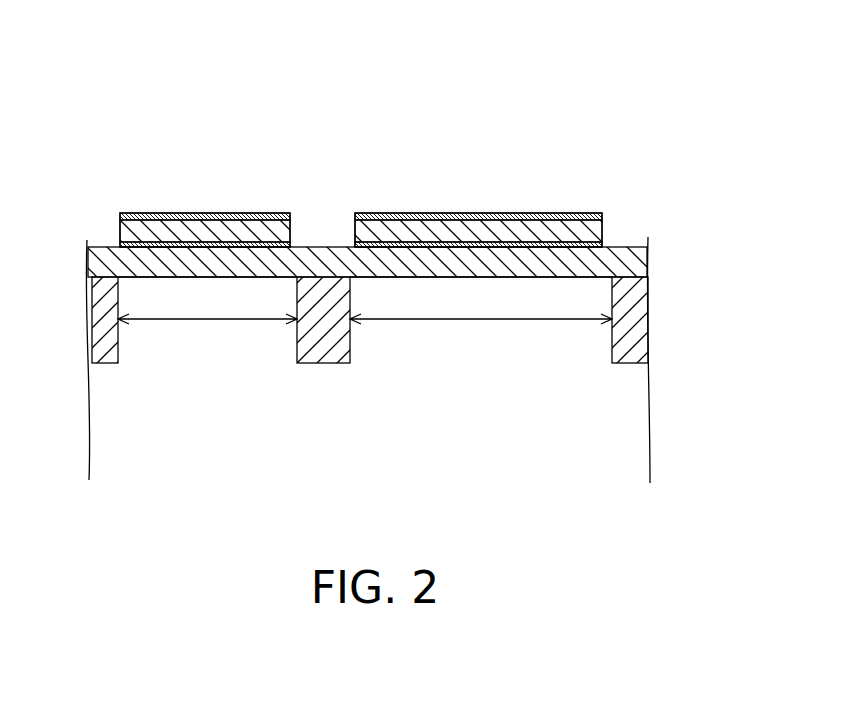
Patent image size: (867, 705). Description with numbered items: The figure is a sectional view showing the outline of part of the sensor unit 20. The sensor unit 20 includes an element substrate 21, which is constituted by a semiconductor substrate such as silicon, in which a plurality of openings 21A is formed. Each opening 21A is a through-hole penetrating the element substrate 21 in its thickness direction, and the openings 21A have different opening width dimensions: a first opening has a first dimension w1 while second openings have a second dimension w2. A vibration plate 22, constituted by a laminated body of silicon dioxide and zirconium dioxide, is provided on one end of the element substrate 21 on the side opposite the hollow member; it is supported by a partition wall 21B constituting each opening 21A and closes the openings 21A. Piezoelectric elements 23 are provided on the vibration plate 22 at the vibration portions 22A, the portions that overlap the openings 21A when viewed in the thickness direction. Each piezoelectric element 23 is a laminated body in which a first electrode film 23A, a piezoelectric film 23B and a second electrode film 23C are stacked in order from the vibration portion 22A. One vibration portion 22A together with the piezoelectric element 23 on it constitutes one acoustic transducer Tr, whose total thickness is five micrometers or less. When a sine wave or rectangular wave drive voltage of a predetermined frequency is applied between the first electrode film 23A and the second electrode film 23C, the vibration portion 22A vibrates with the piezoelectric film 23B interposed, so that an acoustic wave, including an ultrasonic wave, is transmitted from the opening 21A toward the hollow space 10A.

The sensor unit 20 is at (325, 108).
The hollow space 10A is at (552, 420).
The element substrate 21 is at (90, 333).
The opening 21A is at (118, 343).
The partition wall 21B is at (337, 363).
The vibration plate 22 is at (95, 272).
The vibration portion 22A is at (208, 280).
The piezoelectric element 23 is at (120, 226).
The first electrode film 23A is at (452, 240).
The piezoelectric film 23B is at (502, 213).
The second electrode film 23C is at (553, 213).
The acoustic transducer Tr is at (333, 205).
The first dimension w1 is at (207, 331).
The second dimension w2 is at (481, 331).